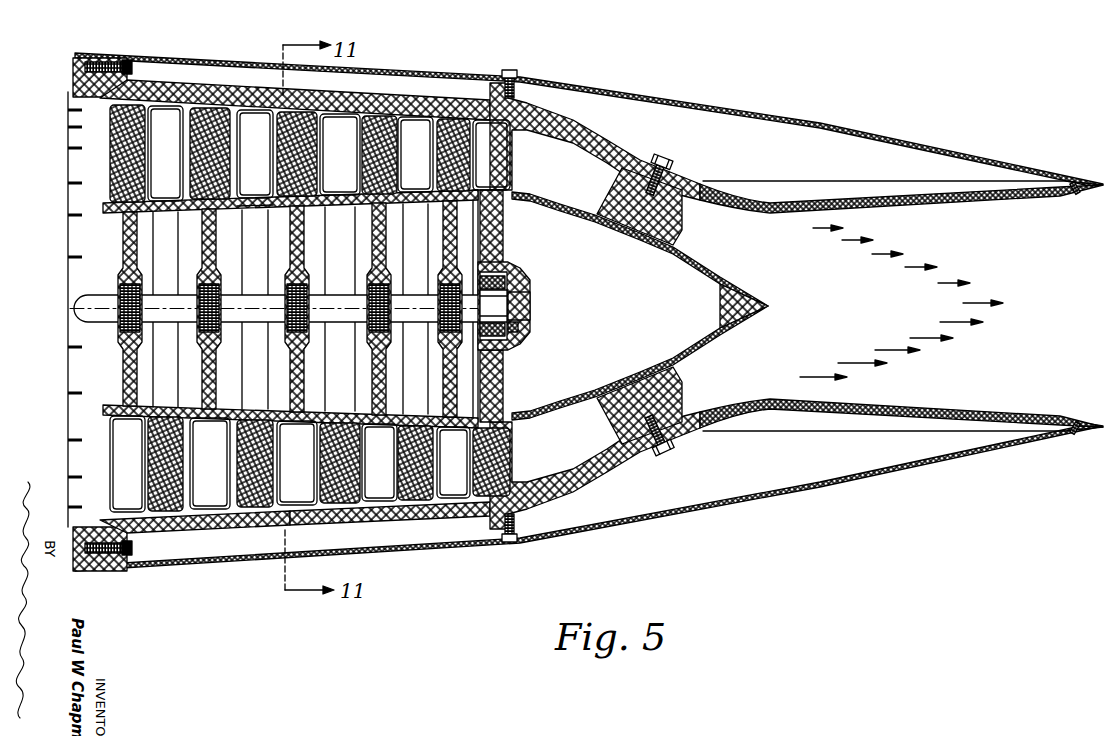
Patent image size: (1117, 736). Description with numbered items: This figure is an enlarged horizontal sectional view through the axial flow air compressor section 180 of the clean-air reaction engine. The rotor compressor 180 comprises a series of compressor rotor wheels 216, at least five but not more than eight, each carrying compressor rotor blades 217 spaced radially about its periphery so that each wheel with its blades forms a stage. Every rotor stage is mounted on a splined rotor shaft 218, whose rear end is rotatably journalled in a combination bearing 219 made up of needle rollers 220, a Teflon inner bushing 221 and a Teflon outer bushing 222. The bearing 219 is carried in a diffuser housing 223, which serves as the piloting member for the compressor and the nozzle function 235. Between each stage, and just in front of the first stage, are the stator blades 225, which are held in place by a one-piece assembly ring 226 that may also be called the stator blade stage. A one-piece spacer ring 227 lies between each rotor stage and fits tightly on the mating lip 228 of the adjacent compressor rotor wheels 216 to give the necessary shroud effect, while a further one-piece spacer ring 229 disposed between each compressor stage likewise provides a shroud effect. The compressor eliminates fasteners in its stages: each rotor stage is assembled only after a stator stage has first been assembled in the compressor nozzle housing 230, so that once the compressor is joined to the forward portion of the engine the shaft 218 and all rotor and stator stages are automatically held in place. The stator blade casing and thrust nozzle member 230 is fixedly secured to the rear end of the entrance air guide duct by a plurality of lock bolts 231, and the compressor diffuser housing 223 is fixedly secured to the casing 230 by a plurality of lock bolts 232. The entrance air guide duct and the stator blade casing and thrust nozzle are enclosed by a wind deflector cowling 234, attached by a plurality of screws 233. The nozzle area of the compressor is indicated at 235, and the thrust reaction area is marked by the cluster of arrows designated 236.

The axial flow air compressor section 180 is at (110, 148).
The compressor rotor wheels 216 is at (284, 309).
The compressor rotor blades 217 is at (124, 461).
The splined rotor shaft 218 is at (76, 300).
The combination bearing 219 is at (514, 328).
The needle rollers 220 is at (507, 292).
The inner bushing 221 is at (523, 298).
The outer bushing 222 is at (502, 266).
The diffuser housing 223 is at (527, 198).
The stator blades 225 is at (174, 165).
The assembly ring 226 is at (330, 532).
The spacer ring 227 is at (255, 208).
The mating lip 228 is at (252, 214).
The spacer ring 229 is at (220, 520).
The stator blade casing and thrust nozzle member 230 is at (597, 481).
The lock bolts 231 is at (133, 64).
The lock bolts 232 is at (668, 153).
The screws 233 is at (514, 74).
The wind deflector cowling 234 is at (635, 92).
The nozzle area 235 is at (777, 282).
The thrust reaction area 236 is at (913, 278).